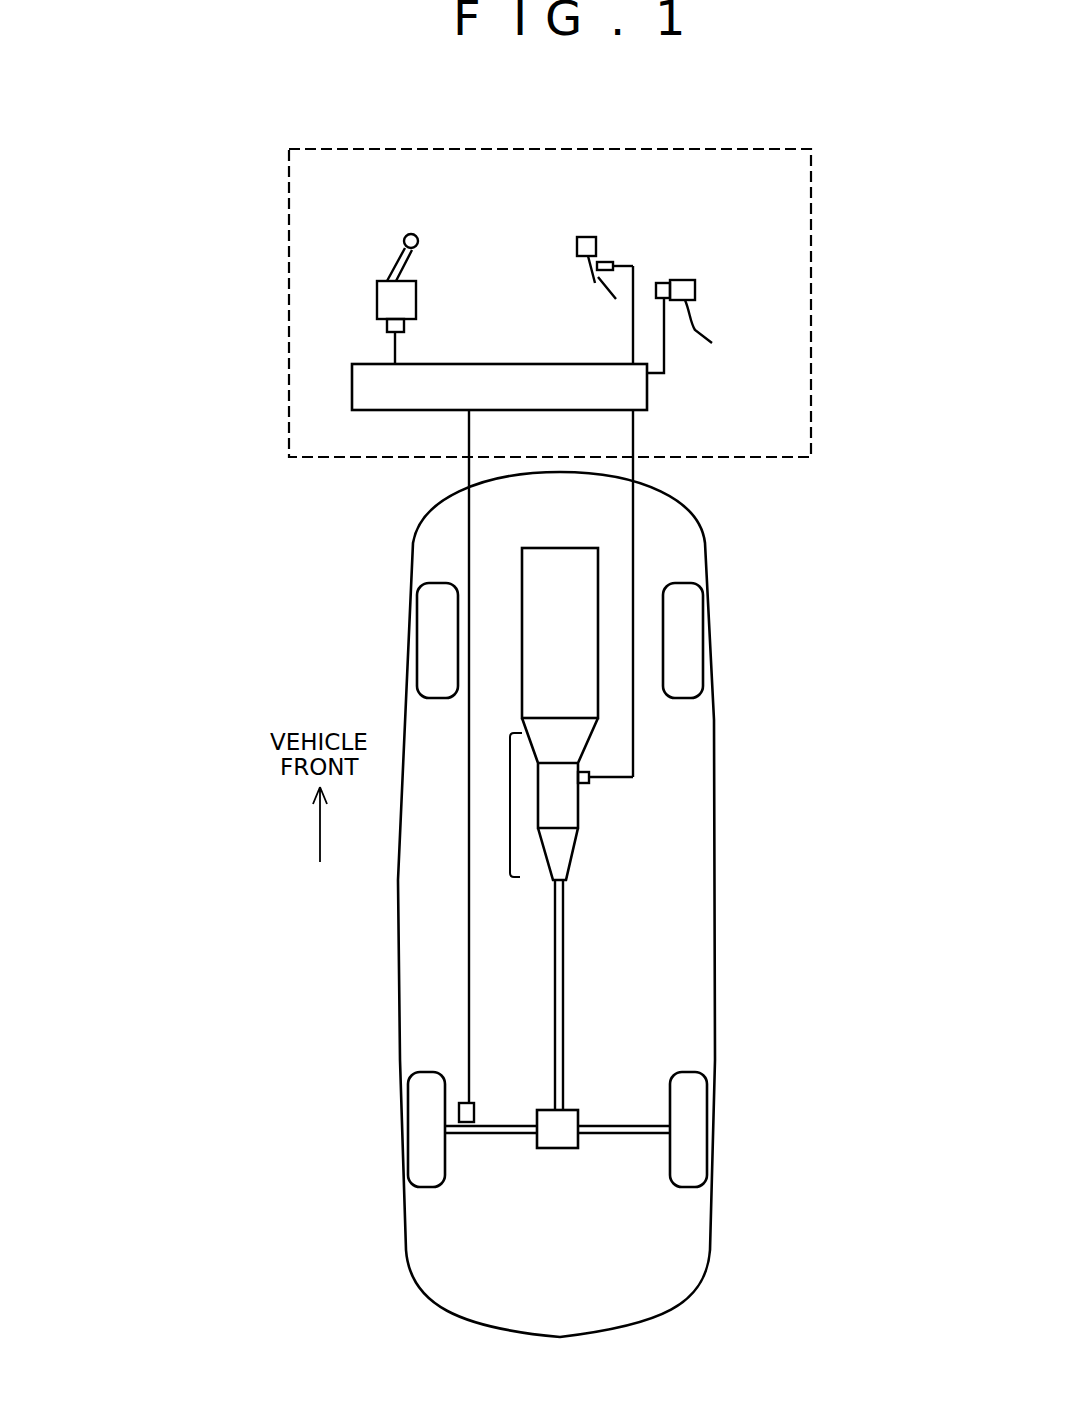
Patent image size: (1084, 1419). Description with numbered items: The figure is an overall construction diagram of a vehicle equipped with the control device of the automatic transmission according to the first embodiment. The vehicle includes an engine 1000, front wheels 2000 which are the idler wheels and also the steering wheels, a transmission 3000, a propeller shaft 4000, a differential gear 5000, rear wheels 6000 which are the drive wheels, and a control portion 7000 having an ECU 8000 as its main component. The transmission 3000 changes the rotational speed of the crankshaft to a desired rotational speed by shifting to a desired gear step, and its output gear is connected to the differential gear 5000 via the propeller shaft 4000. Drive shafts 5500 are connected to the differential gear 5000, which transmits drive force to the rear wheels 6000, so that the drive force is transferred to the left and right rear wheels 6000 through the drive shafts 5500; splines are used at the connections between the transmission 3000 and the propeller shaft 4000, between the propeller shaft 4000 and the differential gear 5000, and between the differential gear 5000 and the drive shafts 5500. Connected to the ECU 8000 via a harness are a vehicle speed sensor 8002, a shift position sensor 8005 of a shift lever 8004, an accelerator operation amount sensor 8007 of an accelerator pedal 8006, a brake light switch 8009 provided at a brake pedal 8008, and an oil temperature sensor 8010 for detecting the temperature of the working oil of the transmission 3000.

The engine 1000 is at (545, 548).
The front wheels 2000 is at (427, 623).
The transmission 3000 is at (508, 803).
The propeller shaft 4000 is at (564, 1007).
The differential gear 5000 is at (562, 1148).
The drive shafts 5500 is at (632, 1126).
The rear wheels 6000 is at (423, 1117).
The control portion 7000 is at (289, 350).
The ECU 8000 is at (590, 337).
The vehicle speed sensor 8002 is at (515, 1083).
The shift lever 8004 is at (415, 262).
The shift position sensor 8005 is at (387, 322).
The accelerator pedal 8006 is at (687, 310).
The accelerator operation amount sensor 8007 is at (663, 277).
The brake pedal 8008 is at (588, 275).
The brake light switch 8009 is at (606, 260).
The oil temperature sensor 8010 is at (583, 786).